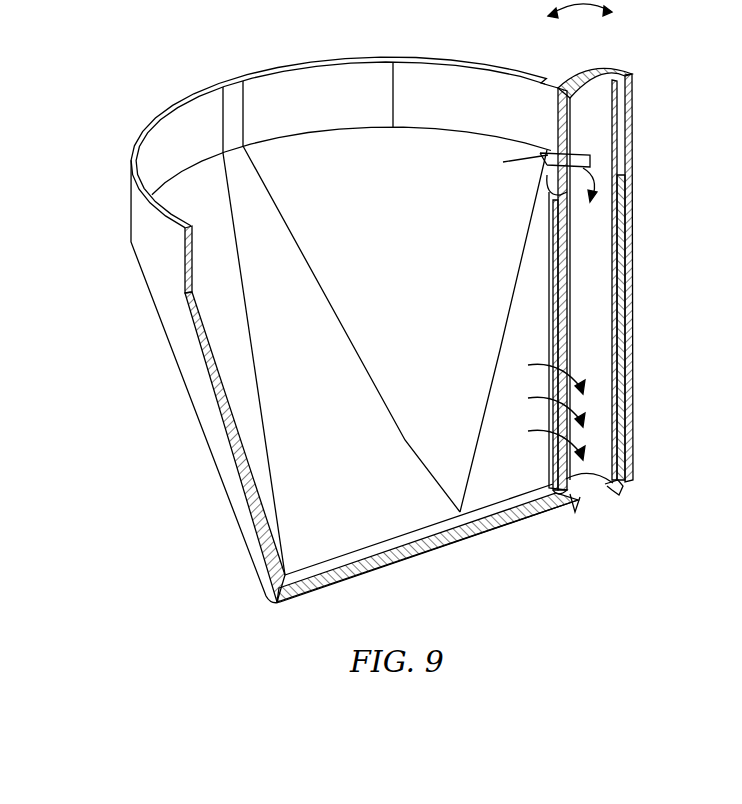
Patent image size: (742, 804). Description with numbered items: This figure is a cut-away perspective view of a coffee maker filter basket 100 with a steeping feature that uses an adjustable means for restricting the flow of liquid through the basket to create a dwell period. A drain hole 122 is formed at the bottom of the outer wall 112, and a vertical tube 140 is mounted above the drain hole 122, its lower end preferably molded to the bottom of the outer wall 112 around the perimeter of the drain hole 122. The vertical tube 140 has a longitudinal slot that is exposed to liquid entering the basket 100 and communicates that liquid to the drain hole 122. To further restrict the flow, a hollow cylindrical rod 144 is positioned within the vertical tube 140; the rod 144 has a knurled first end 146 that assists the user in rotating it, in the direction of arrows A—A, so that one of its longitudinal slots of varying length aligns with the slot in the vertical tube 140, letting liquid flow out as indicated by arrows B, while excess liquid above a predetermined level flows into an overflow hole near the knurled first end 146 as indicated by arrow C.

The basket 100 is at (135, 430).
The outer wall 112 is at (157, 318).
The drain hole 122 is at (589, 503).
The vertical tube 140 is at (623, 143).
The hollow cylindrical rod 144 is at (627, 310).
The knurled first end 146 is at (613, 107).